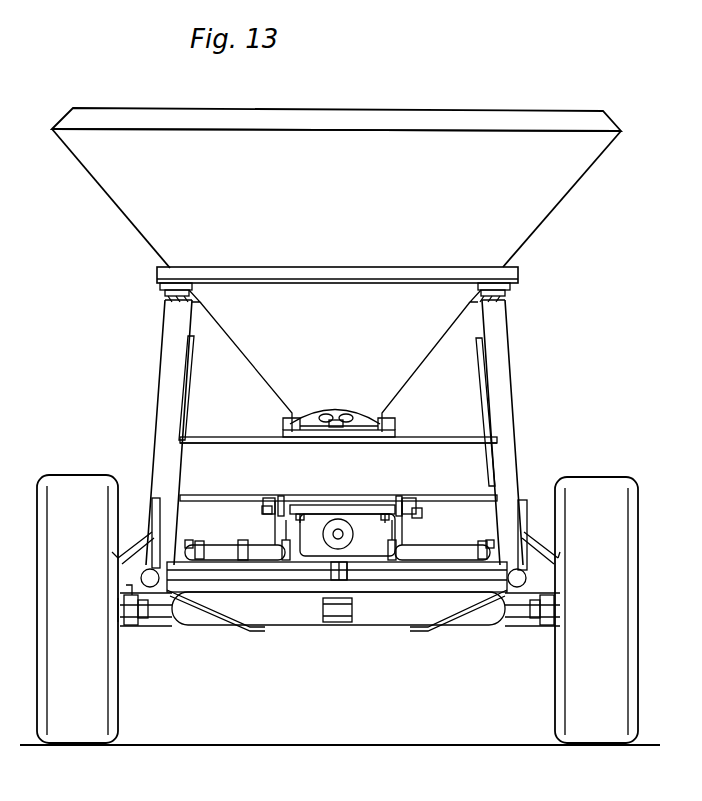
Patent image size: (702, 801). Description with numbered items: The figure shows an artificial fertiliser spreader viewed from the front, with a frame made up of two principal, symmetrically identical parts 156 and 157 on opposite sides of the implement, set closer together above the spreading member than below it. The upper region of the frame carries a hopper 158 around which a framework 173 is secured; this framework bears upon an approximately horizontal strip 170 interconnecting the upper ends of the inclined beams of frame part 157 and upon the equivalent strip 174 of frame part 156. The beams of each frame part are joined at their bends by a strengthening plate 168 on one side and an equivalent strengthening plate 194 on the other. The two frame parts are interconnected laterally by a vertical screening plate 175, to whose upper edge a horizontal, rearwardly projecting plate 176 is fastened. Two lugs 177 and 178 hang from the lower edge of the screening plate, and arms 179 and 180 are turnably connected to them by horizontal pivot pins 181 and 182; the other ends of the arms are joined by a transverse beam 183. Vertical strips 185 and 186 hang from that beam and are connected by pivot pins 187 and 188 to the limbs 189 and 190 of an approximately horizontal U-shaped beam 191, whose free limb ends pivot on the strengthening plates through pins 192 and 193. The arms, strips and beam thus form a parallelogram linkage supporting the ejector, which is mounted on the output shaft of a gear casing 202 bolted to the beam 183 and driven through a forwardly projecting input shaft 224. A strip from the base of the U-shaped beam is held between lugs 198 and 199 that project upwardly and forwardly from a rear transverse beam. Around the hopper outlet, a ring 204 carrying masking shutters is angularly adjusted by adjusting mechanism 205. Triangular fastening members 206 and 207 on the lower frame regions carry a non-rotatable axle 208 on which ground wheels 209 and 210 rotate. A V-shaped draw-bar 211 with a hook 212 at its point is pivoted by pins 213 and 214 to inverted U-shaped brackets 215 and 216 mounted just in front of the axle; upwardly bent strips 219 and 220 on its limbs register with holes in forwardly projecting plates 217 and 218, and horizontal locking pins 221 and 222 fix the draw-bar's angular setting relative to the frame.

The frame part 156 is at (151, 402).
The frame part 157 is at (527, 399).
The hopper 158 is at (485, 112).
The strengthening plate 168 is at (482, 395).
The strip 170 is at (507, 292).
The framework 173 is at (349, 271).
The strip 174 is at (163, 298).
The screening plate 175 is at (442, 444).
The plate 176 is at (404, 442).
The lug 177 is at (262, 498).
The lug 178 is at (400, 498).
The arm 179 is at (242, 541).
The arm 180 is at (422, 514).
The pivot pin 181 is at (262, 510).
The pivot pin 182 is at (418, 506).
The transverse beam 183 is at (290, 501).
The strip 185 is at (272, 552).
The strip 186 is at (398, 546).
The pivot pin 187 is at (287, 546).
The pivot pin 188 is at (389, 548).
The limb 189 is at (215, 560).
The limb 190 is at (468, 556).
The U-shaped beam 191 is at (388, 572).
The pivot pin 192 is at (192, 547).
The pivot pin 193 is at (487, 552).
The strengthening plate 194 is at (188, 398).
The lug 198 is at (327, 574).
The lug 199 is at (349, 576).
The gear casing 202 is at (360, 504).
The ring 204 is at (283, 433).
The adjusting mechanism 205 is at (349, 420).
The triangular fastening member 206 is at (143, 545).
The triangular fastening member 207 is at (540, 548).
The axle 208 is at (178, 627).
The ground wheel 209 is at (118, 720).
The ground wheel 210 is at (555, 720).
The V-shaped draw-bar 211 is at (386, 628).
The hook 212 is at (336, 624).
The pivot pin 213 is at (150, 626).
The pivot pin 214 is at (518, 627).
The inverted U-shaped bracket 215 is at (130, 623).
The inverted U-shaped bracket 216 is at (537, 622).
The plate 217 is at (153, 500).
The plate 218 is at (526, 501).
The upwardly bent strip 219 is at (242, 630).
The upwardly bent strip 220 is at (442, 630).
The locking pin 221 is at (126, 560).
The locking pin 222 is at (548, 562).
The input shaft 224 is at (336, 504).